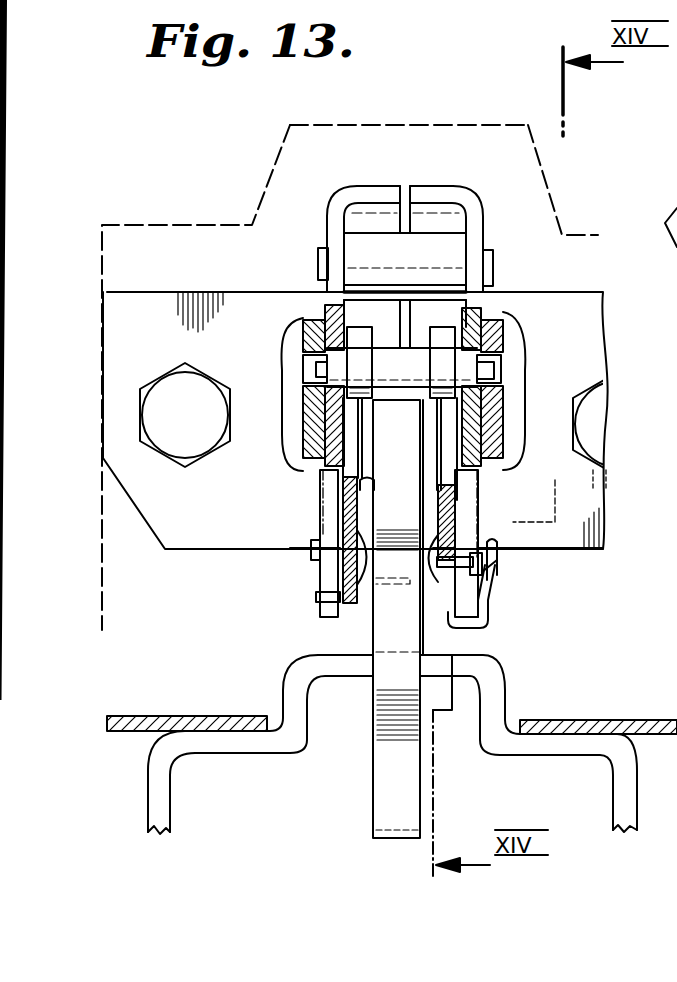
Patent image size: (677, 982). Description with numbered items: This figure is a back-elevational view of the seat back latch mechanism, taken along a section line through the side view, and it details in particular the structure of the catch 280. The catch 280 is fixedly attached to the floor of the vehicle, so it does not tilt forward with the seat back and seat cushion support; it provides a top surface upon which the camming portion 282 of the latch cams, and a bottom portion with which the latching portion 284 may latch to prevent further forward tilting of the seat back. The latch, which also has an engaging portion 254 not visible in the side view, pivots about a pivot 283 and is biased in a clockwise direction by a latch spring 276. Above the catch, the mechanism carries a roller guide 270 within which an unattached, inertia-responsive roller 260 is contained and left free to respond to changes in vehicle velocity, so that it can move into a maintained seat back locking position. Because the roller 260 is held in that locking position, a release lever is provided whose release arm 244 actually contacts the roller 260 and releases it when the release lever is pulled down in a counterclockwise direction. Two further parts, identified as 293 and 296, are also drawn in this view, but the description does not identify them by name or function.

The release arm 244 is at (350, 438).
The engaging portion 254 is at (395, 425).
The inertia-responsive roller 260 is at (388, 360).
The roller guide 270 is at (305, 352).
The latch spring 276 is at (358, 603).
The catch 280 is at (482, 677).
The camming portion 282 is at (396, 692).
The pivot 283 is at (430, 505).
The latching portion 284 is at (398, 812).
The latch 293 is at (498, 563).
The spring clip 296 is at (493, 606).